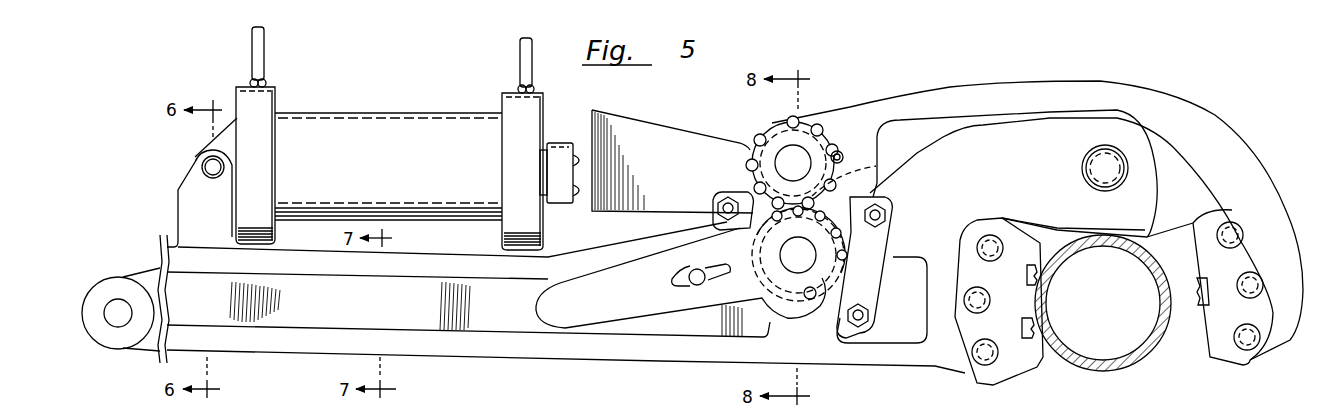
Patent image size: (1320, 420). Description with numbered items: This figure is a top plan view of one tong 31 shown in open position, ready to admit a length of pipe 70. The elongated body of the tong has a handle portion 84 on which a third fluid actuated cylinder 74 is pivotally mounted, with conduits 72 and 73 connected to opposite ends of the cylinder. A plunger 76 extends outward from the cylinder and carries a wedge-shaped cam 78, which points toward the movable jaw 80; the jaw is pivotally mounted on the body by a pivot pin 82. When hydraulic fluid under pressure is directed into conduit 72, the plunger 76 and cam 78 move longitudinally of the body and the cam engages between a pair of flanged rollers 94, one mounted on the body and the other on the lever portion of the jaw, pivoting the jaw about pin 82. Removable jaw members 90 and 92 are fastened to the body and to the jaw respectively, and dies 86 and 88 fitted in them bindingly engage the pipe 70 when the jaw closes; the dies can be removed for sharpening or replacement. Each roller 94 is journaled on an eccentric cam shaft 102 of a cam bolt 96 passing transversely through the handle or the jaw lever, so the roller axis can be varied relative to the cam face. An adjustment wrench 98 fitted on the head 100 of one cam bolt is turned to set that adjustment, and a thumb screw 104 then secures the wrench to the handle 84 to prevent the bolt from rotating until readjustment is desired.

The tong 31 is at (1226, 112).
The pipe 70 is at (1143, 262).
The conduit 72 is at (266, 52).
The conduit 73 is at (523, 66).
The third fluid actuated cylinder 74 is at (428, 128).
The plunger 76 is at (585, 165).
The wedge-shaped cam 78 is at (700, 142).
The movable jaw 80 is at (1210, 152).
The pivot pin 82 is at (1101, 158).
The handle portion 84 is at (426, 348).
The die 86 is at (1038, 330).
The die 88 is at (1200, 294).
The jaw member 90 is at (1015, 358).
The jaw member 92 is at (1233, 360).
The roller 94 is at (876, 172).
The cam bolt 96 is at (795, 156).
The adjustment wrench 98 is at (641, 314).
The head 100 is at (797, 124).
The eccentric cam shaft 102 is at (839, 151).
The thumb screw 104 is at (672, 284).